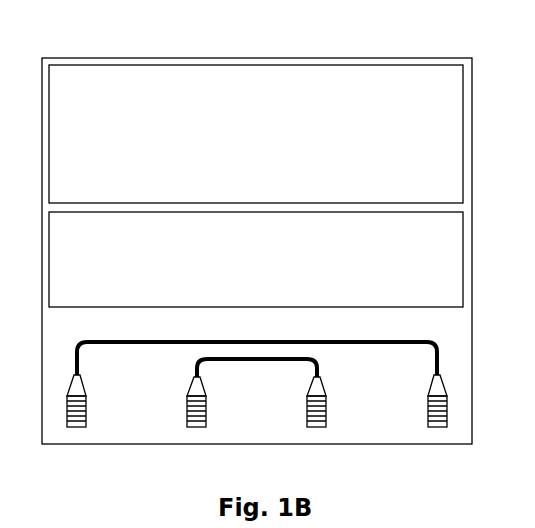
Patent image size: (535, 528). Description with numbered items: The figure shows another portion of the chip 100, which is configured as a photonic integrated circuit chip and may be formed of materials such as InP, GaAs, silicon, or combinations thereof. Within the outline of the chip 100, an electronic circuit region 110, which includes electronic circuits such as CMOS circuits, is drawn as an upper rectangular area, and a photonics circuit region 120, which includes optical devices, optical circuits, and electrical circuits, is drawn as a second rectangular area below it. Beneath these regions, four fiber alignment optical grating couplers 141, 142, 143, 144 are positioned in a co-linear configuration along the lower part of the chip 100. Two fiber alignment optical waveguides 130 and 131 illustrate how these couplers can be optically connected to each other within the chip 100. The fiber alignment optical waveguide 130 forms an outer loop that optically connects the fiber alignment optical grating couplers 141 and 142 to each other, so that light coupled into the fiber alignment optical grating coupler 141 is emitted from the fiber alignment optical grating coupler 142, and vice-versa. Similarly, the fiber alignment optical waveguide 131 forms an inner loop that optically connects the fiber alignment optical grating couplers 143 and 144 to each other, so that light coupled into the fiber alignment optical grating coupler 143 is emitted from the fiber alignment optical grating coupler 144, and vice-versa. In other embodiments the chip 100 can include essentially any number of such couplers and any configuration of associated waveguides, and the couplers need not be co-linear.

The chip 100 is at (397, 58).
The electronic circuit region 110 is at (275, 144).
The photonics circuit region 120 is at (275, 268).
The fiber alignment optical waveguide 130 is at (127, 344).
The fiber alignment optical waveguide 131 is at (239, 361).
The fiber alignment optical grating coupler 141 is at (77, 427).
The fiber alignment optical grating coupler 142 is at (437, 427).
The fiber alignment optical grating coupler 143 is at (197, 427).
The fiber alignment optical grating coupler 144 is at (317, 427).